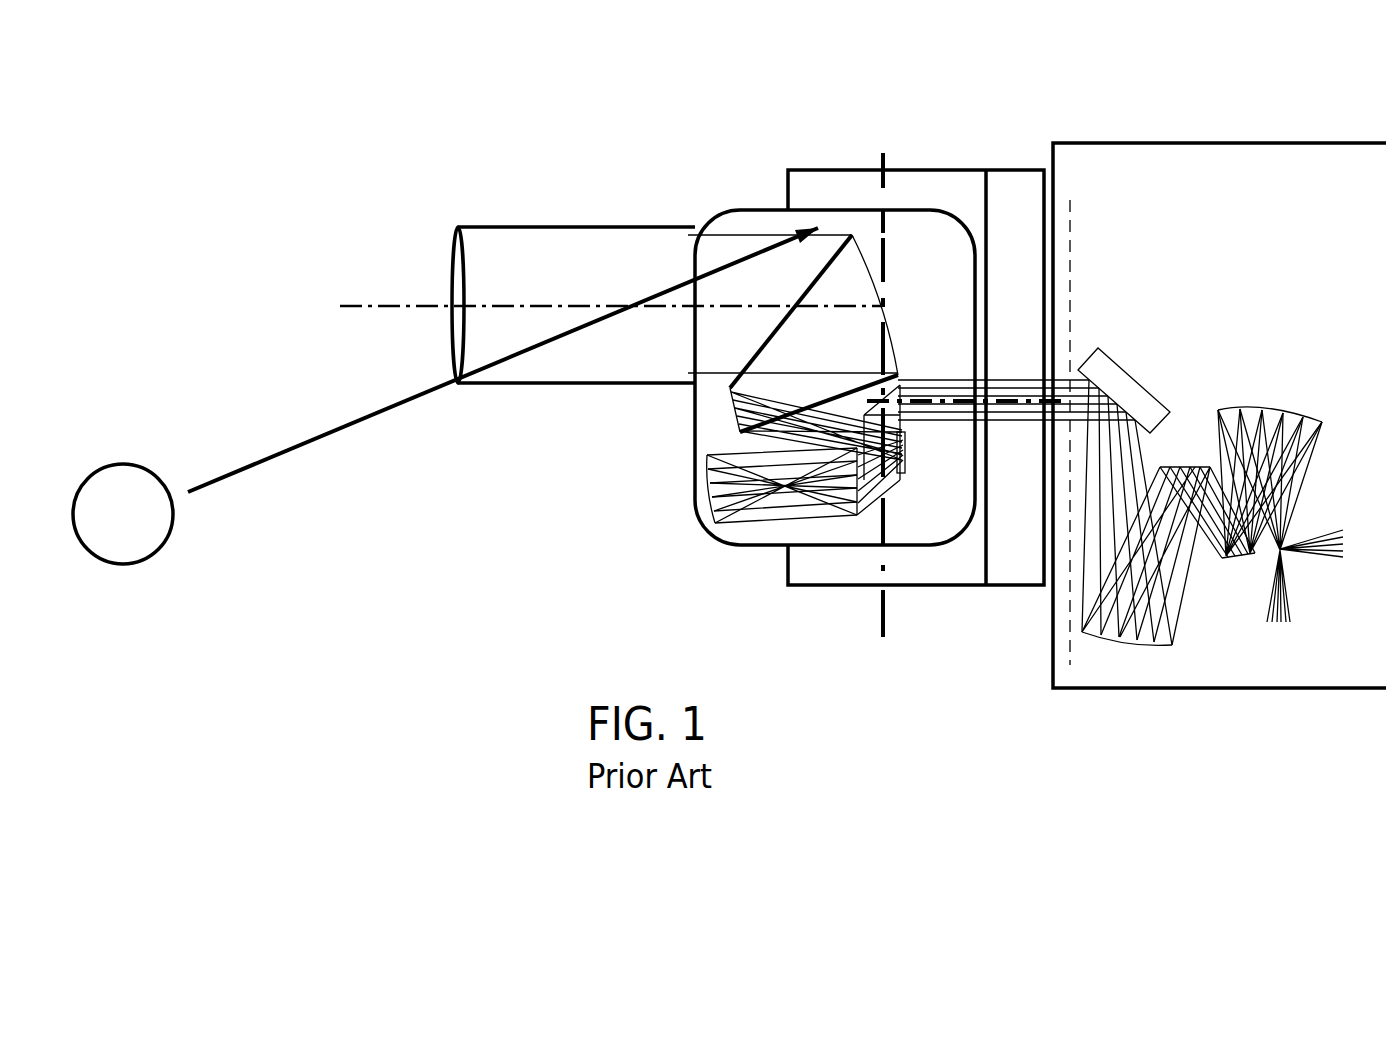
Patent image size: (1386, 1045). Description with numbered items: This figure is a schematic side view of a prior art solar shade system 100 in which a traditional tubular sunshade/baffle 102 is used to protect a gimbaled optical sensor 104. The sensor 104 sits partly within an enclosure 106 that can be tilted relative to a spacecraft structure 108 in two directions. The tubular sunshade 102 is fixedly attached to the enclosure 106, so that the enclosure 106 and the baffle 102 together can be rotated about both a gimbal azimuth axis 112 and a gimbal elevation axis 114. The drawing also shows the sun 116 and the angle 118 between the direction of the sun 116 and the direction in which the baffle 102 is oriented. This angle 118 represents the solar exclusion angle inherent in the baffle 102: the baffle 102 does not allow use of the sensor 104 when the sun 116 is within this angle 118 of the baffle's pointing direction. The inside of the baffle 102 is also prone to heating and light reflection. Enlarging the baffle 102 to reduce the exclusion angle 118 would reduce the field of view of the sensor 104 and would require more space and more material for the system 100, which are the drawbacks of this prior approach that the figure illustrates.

The system 100 is at (241, 212).
The tubular sunshade/baffle 102 is at (600, 226).
The gimbaled optical sensor 104 is at (1138, 282).
The enclosure 106 is at (745, 210).
The spacecraft structure 108 is at (1188, 142).
The gimbal azimuth axis 112 is at (945, 404).
The gimbal elevation axis 114 is at (875, 612).
The sun 116 is at (132, 528).
The angle 118 is at (353, 314).